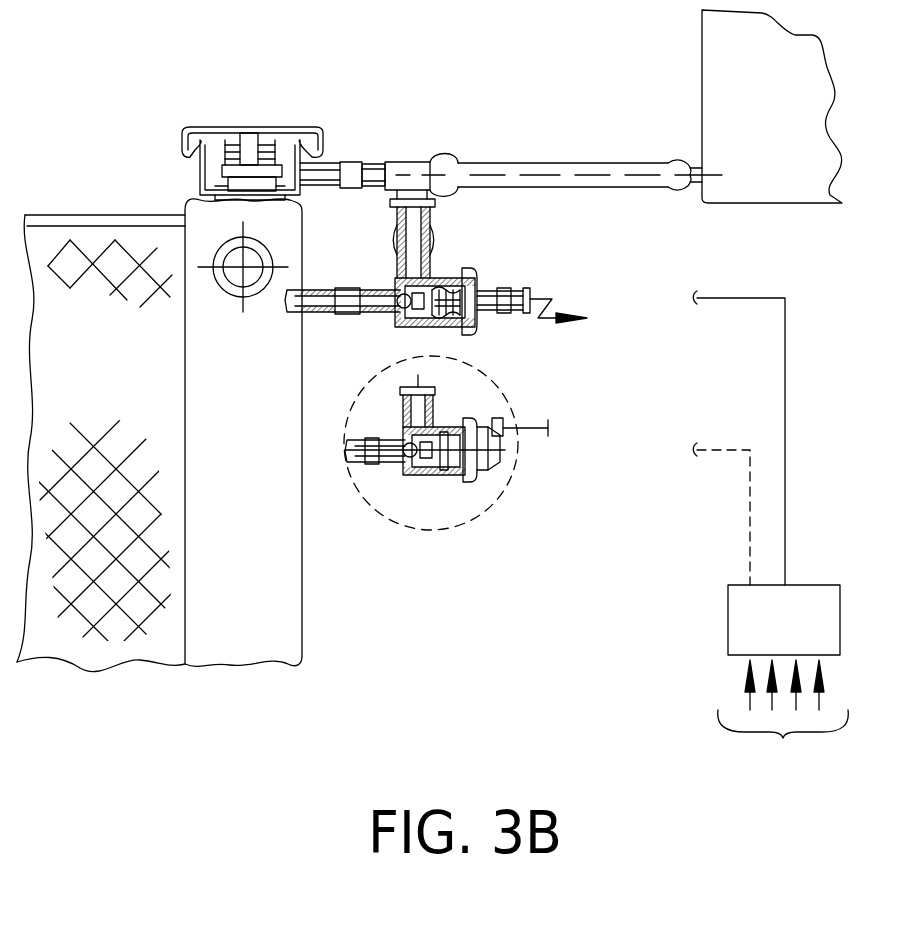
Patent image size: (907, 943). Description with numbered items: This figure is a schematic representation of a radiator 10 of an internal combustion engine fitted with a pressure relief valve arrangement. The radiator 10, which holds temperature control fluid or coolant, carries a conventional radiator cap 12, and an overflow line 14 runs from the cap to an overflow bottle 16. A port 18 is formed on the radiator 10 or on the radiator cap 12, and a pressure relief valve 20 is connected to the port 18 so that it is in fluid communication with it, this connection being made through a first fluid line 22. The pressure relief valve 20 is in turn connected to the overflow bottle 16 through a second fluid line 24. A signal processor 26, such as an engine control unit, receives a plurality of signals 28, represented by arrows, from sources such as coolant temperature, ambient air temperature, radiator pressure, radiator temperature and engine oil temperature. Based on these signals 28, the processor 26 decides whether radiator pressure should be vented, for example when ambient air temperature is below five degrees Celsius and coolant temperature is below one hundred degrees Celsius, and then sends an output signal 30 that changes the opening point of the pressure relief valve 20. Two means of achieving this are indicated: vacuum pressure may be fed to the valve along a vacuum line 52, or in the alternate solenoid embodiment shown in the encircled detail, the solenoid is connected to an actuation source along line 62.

The radiator 10 is at (268, 607).
The radiator cap 12 is at (196, 128).
The overflow line 14 is at (510, 160).
The overflow bottle 16 is at (733, 56).
The port 18 is at (313, 292).
The pressure relief valve 20 is at (452, 280).
The first fluid line 22 is at (398, 310).
The second fluid line 24 is at (398, 277).
The signal processor 26 is at (758, 630).
The signals 28 is at (783, 720).
The output signal 30 is at (748, 546).
The vacuum line 52 is at (521, 292).
The line 62 is at (545, 430).